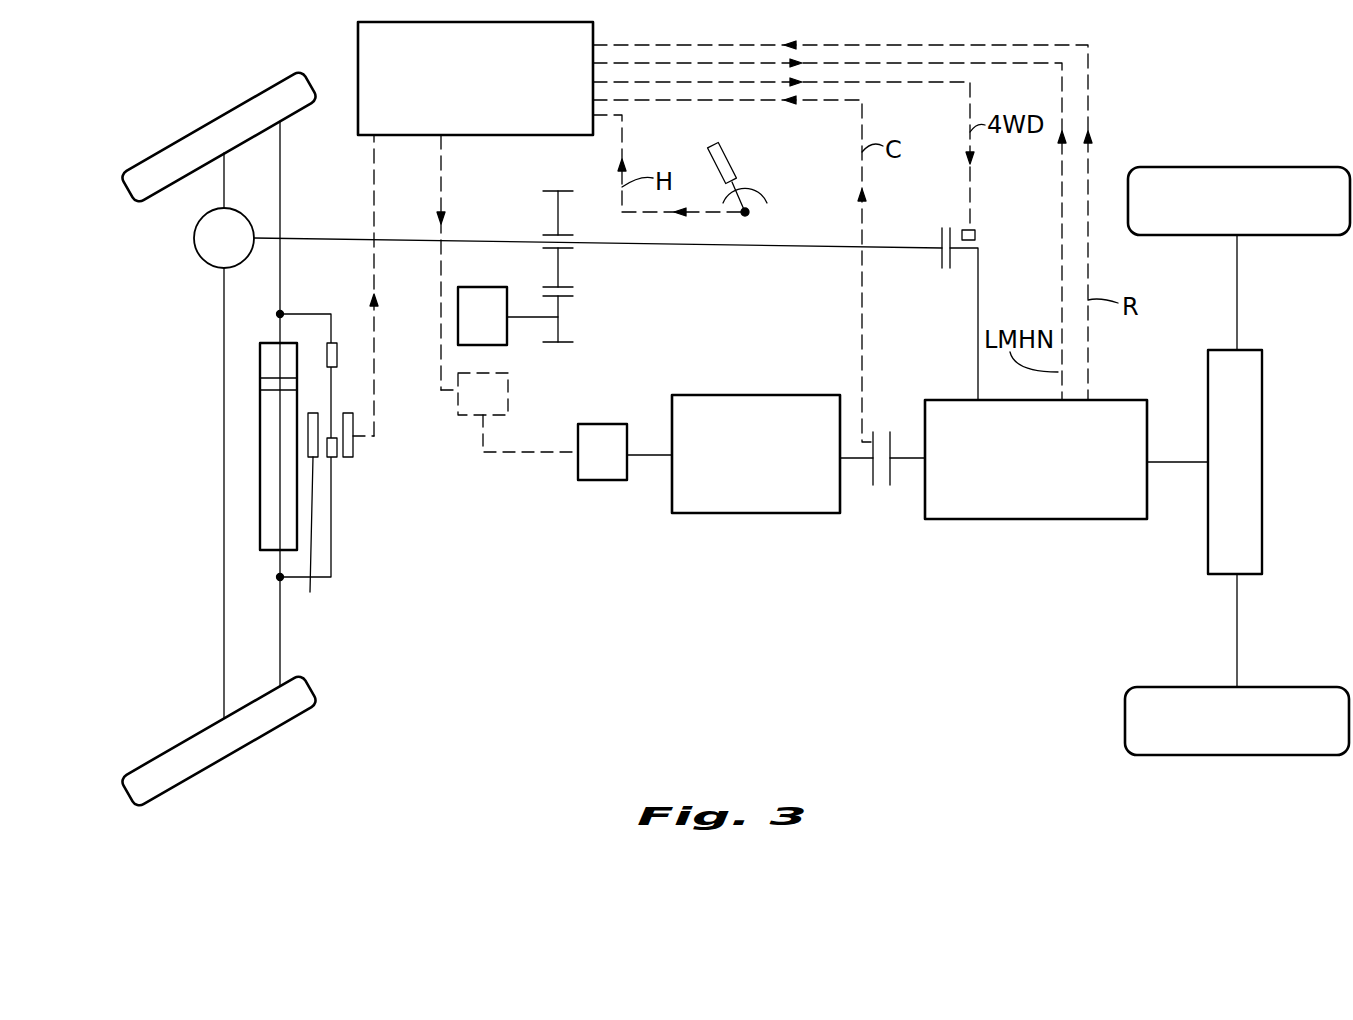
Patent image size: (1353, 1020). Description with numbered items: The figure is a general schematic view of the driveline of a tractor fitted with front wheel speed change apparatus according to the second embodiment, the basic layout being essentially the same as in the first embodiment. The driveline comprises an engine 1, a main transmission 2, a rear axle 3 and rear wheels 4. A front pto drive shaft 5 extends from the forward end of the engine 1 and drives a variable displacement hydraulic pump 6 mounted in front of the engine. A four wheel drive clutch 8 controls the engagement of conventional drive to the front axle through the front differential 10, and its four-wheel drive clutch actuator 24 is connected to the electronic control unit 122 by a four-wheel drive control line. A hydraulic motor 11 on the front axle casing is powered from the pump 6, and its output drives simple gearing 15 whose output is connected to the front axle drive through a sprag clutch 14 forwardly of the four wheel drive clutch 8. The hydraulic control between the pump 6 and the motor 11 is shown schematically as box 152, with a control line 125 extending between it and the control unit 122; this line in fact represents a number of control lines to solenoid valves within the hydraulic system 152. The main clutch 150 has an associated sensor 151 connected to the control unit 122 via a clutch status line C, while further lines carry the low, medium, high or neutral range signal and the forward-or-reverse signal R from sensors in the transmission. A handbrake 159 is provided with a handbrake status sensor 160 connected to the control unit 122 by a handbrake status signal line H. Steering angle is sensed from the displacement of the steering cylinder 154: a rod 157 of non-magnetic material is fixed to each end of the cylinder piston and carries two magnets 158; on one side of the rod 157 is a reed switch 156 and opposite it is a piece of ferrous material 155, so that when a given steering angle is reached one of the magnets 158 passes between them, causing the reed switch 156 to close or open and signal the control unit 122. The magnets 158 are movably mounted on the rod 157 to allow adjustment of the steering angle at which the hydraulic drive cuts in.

The engine 1 is at (762, 515).
The main transmission 2 is at (1040, 520).
The rear axle 3 is at (1262, 467).
The rear wheels 4 is at (1210, 167).
The front pto drive shaft 5 is at (653, 457).
The variable displacement hydraulic pump 6 is at (602, 480).
The four wheel drive clutch 8 is at (938, 237).
The front differential 10 is at (208, 253).
The hydraulic motor 11 is at (474, 287).
The sprag clutch 14 is at (565, 252).
The gearing 15 is at (690, 255).
The four-wheel drive clutch actuator 24 is at (976, 231).
The electronic control unit 122 is at (500, 86).
The control line 125 is at (441, 239).
The main clutch 150 is at (892, 472).
The sensor 151 is at (866, 440).
The hydraulic system 152 is at (458, 408).
The steering cylinder 154 is at (260, 443).
The piece of ferrous material 155 is at (313, 517).
The reed switch 156 is at (355, 443).
The rod 157 is at (331, 325).
The magnets 158 is at (334, 458).
The handbrake 159 is at (374, 140).
The handbrake status sensor 160 is at (750, 216).